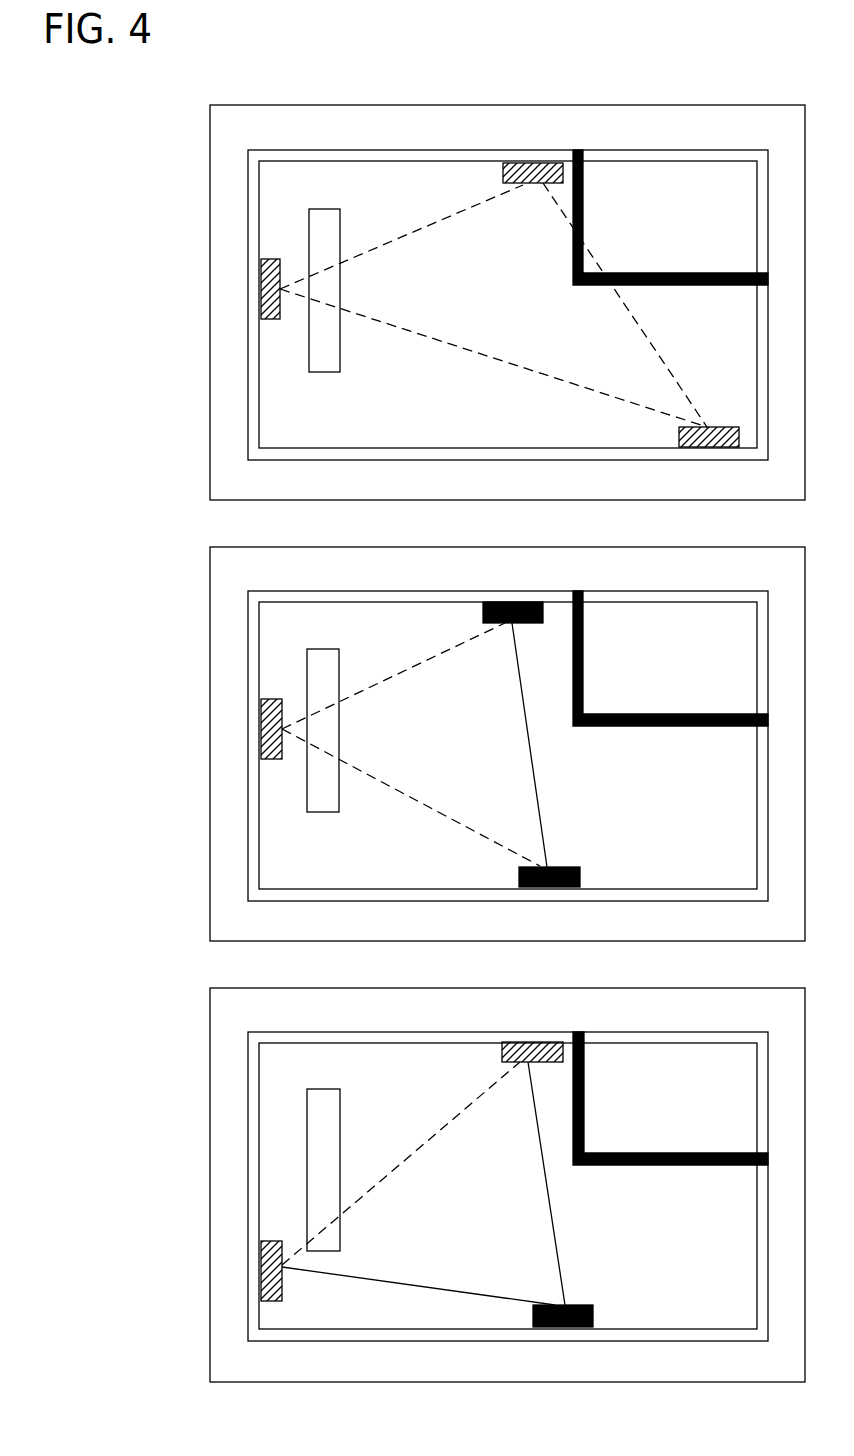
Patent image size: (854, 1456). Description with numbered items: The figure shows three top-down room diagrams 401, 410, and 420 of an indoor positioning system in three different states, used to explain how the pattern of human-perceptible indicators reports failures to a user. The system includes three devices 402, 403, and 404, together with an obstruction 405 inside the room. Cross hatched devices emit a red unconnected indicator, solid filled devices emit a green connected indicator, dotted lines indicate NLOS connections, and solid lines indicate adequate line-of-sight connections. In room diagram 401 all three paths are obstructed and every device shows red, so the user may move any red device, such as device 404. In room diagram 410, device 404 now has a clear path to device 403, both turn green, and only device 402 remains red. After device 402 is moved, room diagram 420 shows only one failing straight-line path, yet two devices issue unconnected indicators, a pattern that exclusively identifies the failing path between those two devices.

The room diagram 401 is at (789, 156).
The room diagram 410 is at (789, 598).
The room diagram 420 is at (789, 1039).
The device 402 is at (261, 297).
The device 403 is at (537, 163).
The device 404 is at (713, 447).
The obstruction 405 is at (323, 209).